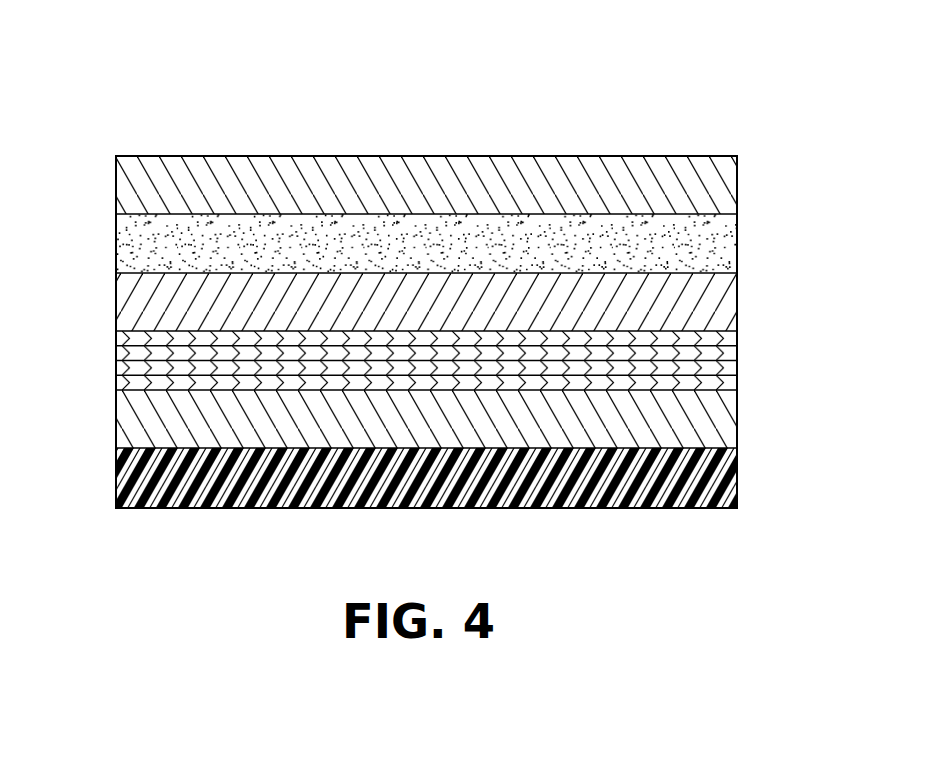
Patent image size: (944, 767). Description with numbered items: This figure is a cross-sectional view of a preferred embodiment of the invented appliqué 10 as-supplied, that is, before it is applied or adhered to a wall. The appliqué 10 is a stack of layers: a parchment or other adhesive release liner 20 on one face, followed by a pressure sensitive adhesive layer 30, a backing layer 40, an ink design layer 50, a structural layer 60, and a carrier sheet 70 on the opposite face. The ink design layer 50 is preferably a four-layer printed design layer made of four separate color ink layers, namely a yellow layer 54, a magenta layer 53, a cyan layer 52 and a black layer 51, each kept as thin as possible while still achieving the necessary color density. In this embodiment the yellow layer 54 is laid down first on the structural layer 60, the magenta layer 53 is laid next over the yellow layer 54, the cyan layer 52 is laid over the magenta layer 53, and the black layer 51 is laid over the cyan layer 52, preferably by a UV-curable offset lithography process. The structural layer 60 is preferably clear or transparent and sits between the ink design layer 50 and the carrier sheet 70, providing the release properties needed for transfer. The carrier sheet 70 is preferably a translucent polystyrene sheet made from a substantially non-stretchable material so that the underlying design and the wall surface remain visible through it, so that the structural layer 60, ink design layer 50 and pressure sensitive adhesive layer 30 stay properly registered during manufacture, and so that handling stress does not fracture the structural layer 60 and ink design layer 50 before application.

The appliqué 10 is at (148, 110).
The adhesive release liner 20 is at (117, 182).
The pressure sensitive adhesive layer 30 is at (135, 233).
The backing layer 40 is at (118, 295).
The ink design layer 50 is at (433, 361).
The black color ink layer 51 is at (737, 338).
The cyan color ink layer 52 is at (737, 355).
The magenta color ink layer 53 is at (737, 370).
The yellow color ink layer 54 is at (737, 385).
The structural layer 60 is at (118, 418).
The carrier sheet 70 is at (118, 484).